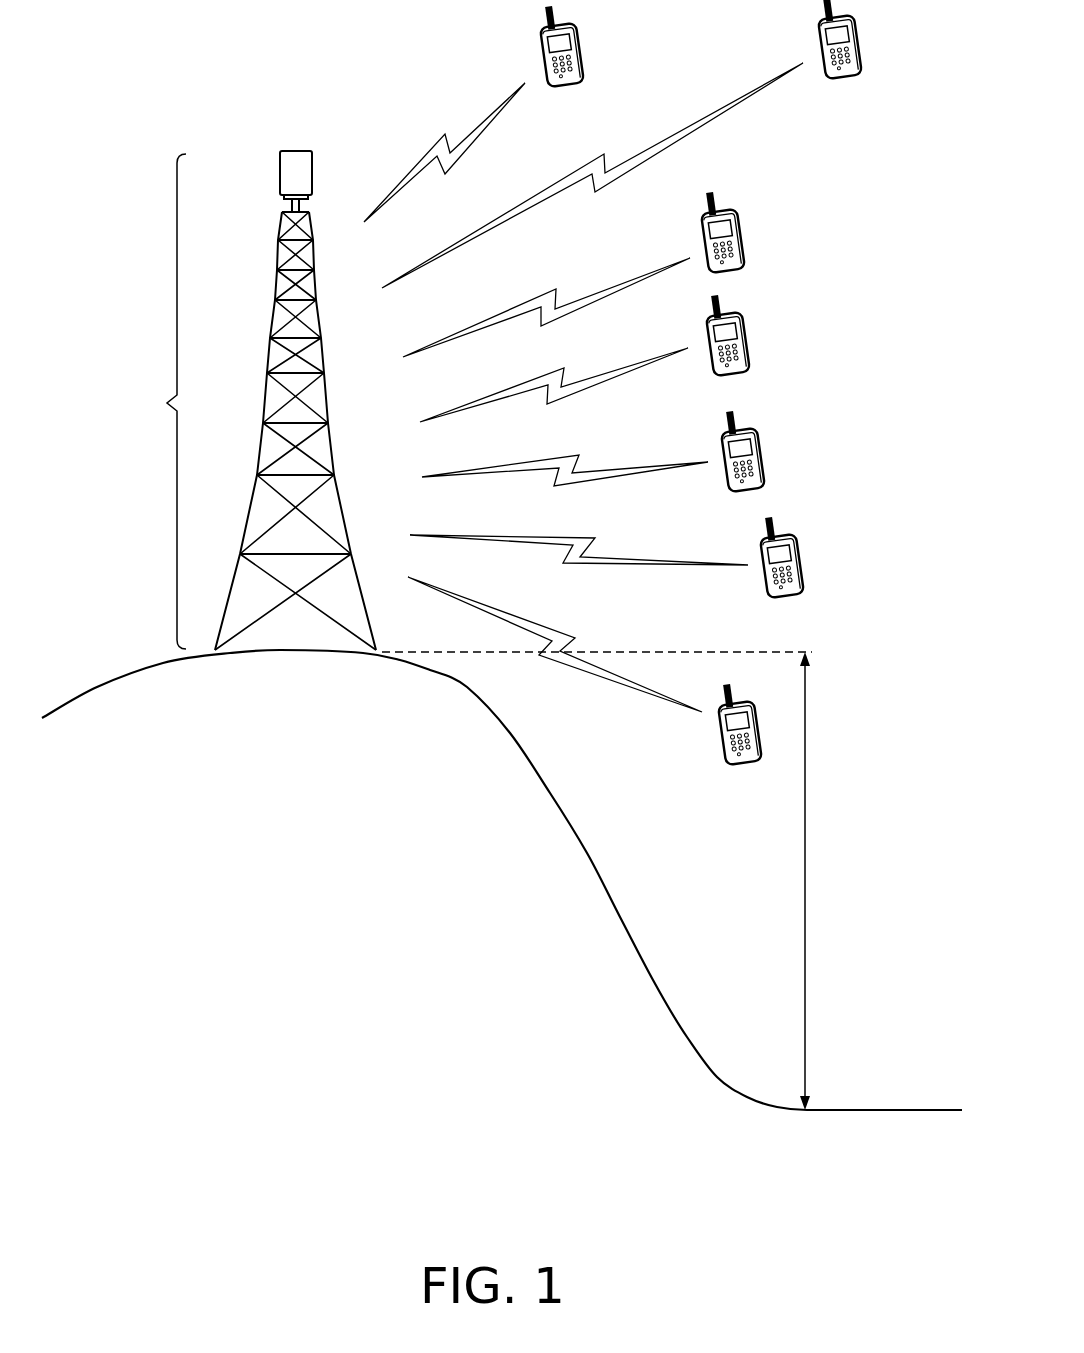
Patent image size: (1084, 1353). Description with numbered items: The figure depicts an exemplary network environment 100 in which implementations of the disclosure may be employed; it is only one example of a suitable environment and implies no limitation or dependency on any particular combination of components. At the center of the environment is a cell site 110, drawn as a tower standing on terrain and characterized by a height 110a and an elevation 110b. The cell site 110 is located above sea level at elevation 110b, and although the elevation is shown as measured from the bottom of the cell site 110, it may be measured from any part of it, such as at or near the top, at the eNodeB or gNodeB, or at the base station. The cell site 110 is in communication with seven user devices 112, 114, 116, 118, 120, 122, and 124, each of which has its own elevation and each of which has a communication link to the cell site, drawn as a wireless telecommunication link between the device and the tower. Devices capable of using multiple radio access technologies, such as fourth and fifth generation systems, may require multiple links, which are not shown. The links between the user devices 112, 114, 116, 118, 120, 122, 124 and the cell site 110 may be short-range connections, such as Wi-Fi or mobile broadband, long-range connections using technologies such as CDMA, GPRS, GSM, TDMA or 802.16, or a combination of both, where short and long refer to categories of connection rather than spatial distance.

The network environment 100 is at (114, 85).
The cell site 110 is at (326, 385).
The height 110a is at (149, 401).
The elevation 110b is at (606, 881).
The user device 112 is at (583, 52).
The user device 114 is at (861, 41).
The user device 116 is at (744, 236).
The user device 118 is at (749, 340).
The user device 120 is at (764, 453).
The user device 122 is at (803, 561).
The user device 124 is at (719, 741).